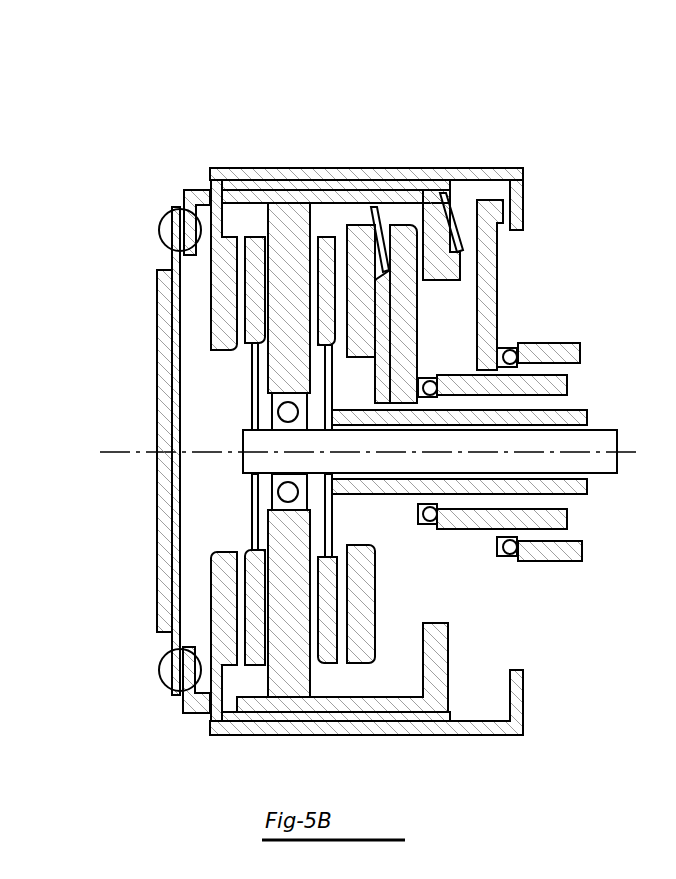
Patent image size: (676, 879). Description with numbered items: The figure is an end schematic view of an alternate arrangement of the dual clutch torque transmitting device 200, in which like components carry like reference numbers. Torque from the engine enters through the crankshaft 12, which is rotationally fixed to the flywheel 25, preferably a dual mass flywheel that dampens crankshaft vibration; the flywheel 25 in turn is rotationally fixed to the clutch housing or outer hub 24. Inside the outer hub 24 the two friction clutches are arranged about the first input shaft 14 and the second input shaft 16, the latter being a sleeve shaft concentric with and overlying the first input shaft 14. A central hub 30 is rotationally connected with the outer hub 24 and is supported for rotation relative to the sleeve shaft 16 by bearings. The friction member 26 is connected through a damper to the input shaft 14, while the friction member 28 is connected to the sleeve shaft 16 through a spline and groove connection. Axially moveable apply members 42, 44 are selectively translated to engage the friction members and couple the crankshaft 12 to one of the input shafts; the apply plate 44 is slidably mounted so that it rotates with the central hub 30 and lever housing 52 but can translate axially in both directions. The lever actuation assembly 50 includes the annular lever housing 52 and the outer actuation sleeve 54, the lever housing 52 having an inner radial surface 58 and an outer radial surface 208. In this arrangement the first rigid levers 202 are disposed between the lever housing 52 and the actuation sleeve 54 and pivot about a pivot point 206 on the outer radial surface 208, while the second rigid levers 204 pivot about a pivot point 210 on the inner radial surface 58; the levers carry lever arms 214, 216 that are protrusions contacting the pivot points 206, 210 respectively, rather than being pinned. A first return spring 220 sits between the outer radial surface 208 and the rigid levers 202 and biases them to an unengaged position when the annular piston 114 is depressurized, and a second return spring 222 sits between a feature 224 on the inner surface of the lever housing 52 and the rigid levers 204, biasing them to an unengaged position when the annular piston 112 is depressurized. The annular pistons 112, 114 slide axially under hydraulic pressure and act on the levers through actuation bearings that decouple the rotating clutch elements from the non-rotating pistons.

The torque transmitting device 200 is at (562, 128).
The lever actuation assembly 50 is at (528, 172).
The outer actuation sleeve 54 is at (440, 170).
The lever housing 52 is at (268, 188).
The outer hub 24 is at (230, 192).
The central hub 30 is at (272, 375).
The friction member 26 is at (253, 420).
The friction member 28 is at (332, 385).
The apply member 44 is at (350, 238).
The feature 224 is at (353, 218).
The second return spring 222 is at (380, 215).
The lever arm 216 is at (403, 237).
The inner radial surface 58 is at (420, 205).
The first return spring 220 is at (450, 208).
The outer radial surface 208 is at (400, 232).
The pivot point 210 is at (473, 248).
The lever arm 214 is at (463, 265).
The first rigid levers 202 is at (493, 307).
The second rigid levers 204 is at (412, 350).
The pivot point 206 is at (437, 282).
The annular piston 114 is at (580, 355).
The annular piston 112 is at (565, 388).
The second input shaft 16 is at (585, 418).
The first input shaft 14 is at (605, 442).
The crankshaft 12 is at (158, 347).
The apply member 42 is at (213, 303).
The flywheel 25 is at (170, 248).